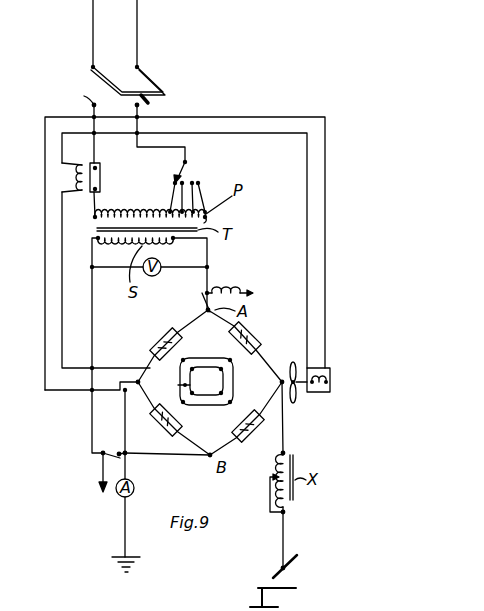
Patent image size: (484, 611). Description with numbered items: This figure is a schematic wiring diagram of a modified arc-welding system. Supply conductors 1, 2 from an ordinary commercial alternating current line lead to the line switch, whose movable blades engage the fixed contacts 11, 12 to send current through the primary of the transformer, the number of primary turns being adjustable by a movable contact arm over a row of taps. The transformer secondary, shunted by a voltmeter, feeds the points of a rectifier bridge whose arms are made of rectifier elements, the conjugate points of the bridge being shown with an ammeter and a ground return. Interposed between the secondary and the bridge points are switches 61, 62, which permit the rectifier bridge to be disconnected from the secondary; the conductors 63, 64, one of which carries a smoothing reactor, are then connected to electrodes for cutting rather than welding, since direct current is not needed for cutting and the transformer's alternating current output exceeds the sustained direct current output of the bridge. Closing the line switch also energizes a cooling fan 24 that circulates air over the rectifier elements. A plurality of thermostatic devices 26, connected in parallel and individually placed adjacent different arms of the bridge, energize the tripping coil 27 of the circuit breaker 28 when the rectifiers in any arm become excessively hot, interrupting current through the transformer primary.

The conductor 1 is at (94, 40).
The conductor 2 is at (138, 38).
The fixed contact 11 is at (83, 95).
The fixed contact 12 is at (150, 107).
The cooling fan 24 is at (313, 393).
The thermostatic device 26 is at (183, 358).
The tripping coil 27 is at (64, 177).
The circuit breaker 28 is at (101, 178).
The switch 61 is at (113, 446).
The switch 62 is at (203, 301).
The conductor 63 is at (98, 478).
The conductor 64 is at (249, 289).